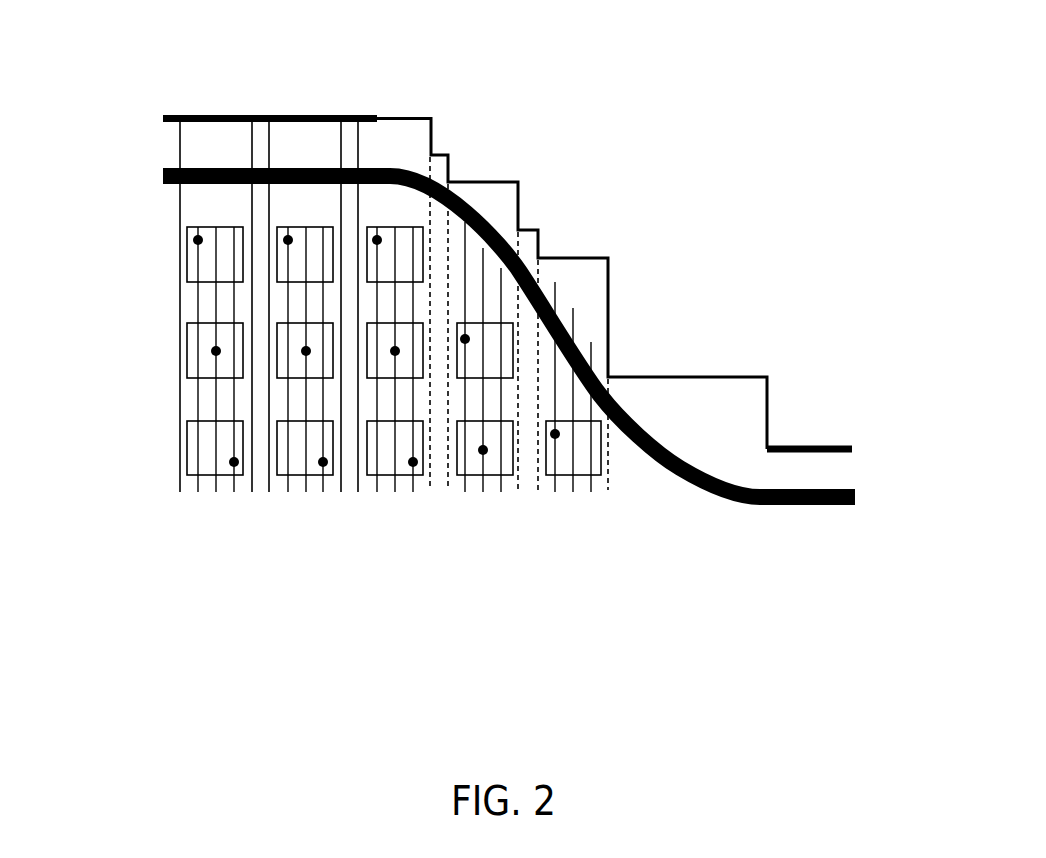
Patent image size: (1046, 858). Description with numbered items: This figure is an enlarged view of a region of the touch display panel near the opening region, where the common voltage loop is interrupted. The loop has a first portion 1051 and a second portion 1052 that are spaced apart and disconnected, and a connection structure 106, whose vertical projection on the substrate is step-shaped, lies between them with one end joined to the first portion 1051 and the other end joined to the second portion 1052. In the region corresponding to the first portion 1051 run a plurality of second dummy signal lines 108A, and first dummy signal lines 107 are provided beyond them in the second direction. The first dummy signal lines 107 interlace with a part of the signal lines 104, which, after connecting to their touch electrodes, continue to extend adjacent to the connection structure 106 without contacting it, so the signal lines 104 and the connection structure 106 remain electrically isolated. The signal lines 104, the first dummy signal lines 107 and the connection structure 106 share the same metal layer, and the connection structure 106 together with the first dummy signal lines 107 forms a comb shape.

The signal lines 104 is at (238, 484).
The connection structure 106 is at (579, 256).
The first dummy signal lines 107 is at (613, 455).
The second dummy signal lines 108A is at (177, 467).
The first portion 1051 is at (310, 113).
The second portion 1052 is at (821, 441).